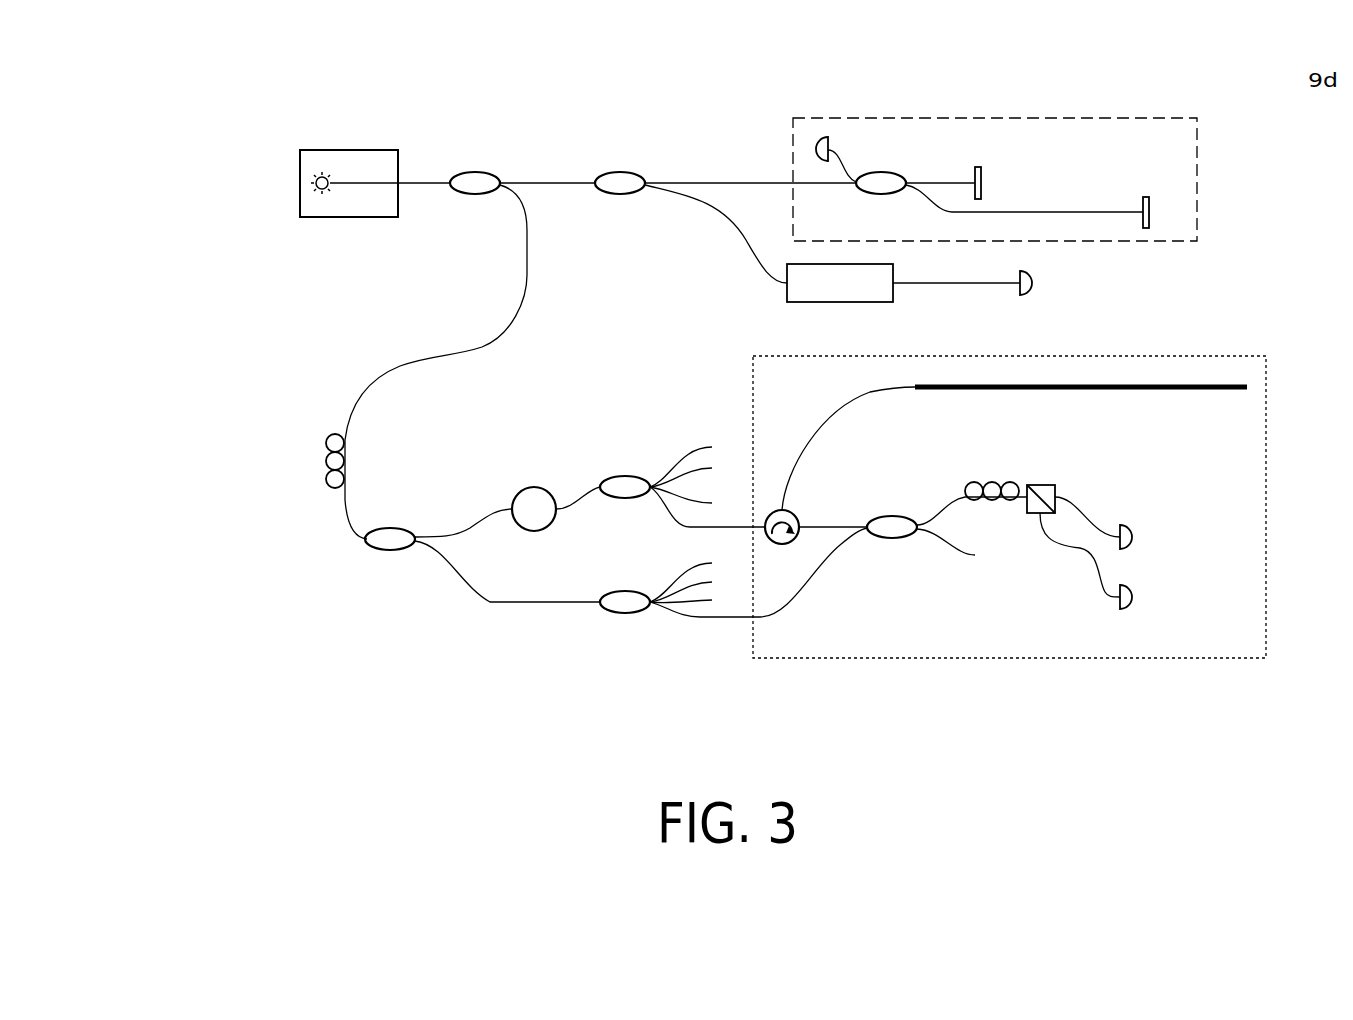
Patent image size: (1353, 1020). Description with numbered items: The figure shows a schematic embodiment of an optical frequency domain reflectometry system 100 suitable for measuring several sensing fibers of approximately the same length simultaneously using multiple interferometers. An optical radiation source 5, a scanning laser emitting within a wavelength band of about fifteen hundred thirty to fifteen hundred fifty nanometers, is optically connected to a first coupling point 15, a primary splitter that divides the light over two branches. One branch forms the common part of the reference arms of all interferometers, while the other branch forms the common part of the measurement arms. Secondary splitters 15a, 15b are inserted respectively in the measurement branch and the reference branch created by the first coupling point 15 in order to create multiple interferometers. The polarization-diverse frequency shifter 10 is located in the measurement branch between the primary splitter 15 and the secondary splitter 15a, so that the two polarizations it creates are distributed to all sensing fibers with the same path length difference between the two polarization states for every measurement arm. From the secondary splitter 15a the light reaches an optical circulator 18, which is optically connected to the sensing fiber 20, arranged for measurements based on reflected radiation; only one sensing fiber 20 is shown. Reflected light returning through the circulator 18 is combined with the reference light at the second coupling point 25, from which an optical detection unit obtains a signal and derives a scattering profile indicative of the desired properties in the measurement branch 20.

The optical frequency domain reflectometry system 100 is at (134, 106).
The optical radiation source 5 is at (273, 168).
The PDFS 10 is at (496, 490).
The first coupling point 15 is at (373, 566).
The secondary splitter 15a is at (630, 457).
The secondary splitter 15b is at (635, 633).
The optical circulator 18 is at (806, 498).
The sensing fiber 20 is at (1202, 396).
The second coupling point 25 is at (858, 553).